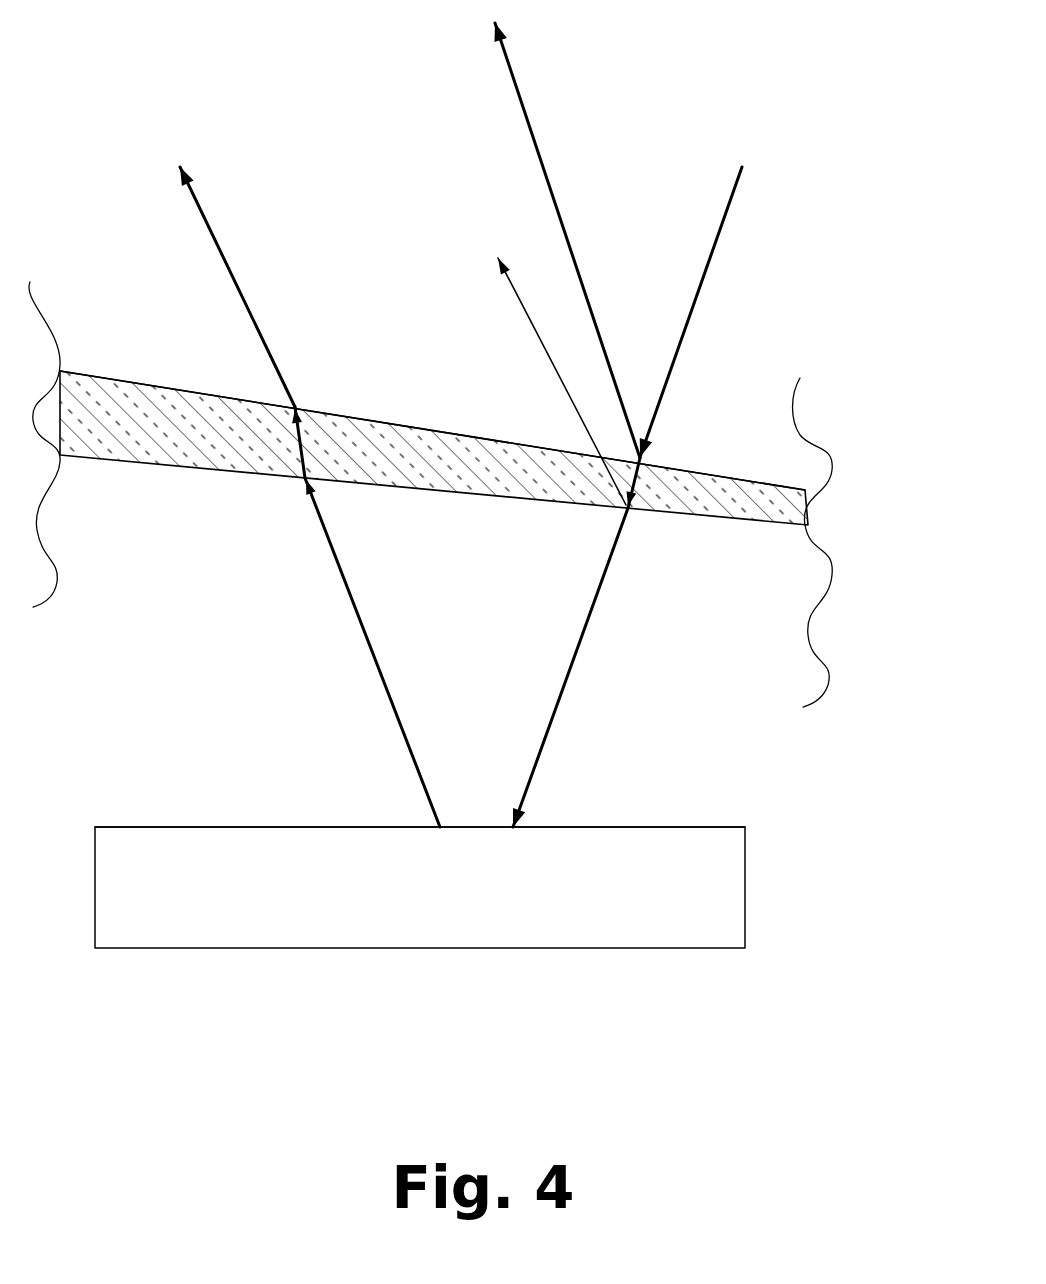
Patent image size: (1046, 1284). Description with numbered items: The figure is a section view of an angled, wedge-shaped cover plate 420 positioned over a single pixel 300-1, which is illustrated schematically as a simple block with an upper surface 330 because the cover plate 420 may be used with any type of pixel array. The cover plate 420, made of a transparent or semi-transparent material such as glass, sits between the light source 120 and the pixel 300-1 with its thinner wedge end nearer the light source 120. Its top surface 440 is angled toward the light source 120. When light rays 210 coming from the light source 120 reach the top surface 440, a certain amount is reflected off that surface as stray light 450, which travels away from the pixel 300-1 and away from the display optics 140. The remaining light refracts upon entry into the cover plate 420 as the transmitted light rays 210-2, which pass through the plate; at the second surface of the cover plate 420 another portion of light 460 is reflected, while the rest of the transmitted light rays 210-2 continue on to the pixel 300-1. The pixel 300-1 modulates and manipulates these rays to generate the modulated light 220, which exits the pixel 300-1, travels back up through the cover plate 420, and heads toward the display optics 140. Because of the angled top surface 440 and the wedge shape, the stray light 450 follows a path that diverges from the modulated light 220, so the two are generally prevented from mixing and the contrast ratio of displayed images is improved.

The display optics 140 is at (130, 135).
The light source 120 is at (784, 135).
The cover plate 420 is at (132, 432).
The top surface 440 is at (718, 474).
The modulated light 220 is at (218, 249).
The light rays 210 is at (721, 213).
The stray light 450 is at (509, 65).
The transmitted light rays 210-2 is at (638, 475).
The portion of light 460 is at (535, 332).
The pixel 300-1 is at (500, 908).
The upper surface 330 is at (692, 827).